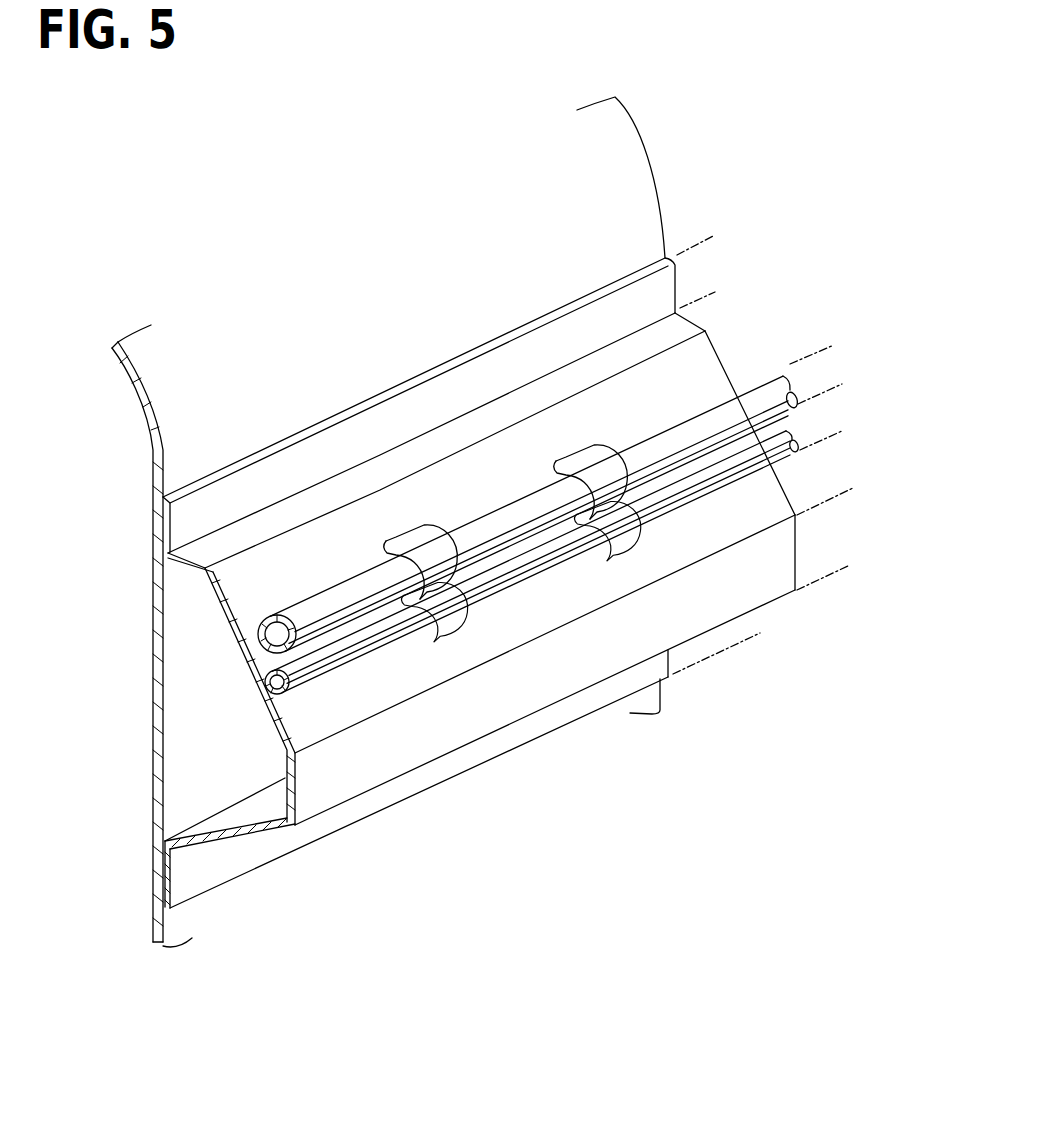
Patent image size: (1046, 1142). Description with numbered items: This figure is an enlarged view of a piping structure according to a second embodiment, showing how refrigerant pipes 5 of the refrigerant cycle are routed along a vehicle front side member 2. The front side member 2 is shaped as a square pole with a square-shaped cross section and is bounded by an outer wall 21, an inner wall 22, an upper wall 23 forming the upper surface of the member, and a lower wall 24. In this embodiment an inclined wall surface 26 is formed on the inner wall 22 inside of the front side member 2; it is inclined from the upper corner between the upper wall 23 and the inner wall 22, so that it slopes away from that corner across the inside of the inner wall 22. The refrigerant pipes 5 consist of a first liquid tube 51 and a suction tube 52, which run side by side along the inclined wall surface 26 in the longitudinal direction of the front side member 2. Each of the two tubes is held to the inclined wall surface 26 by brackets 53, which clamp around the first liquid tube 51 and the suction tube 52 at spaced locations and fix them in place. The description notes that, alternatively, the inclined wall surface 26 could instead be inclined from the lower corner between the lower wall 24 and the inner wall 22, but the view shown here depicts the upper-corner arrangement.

The front side member 2 is at (420, 778).
The outer wall 21 is at (176, 752).
The inner wall 22 is at (552, 690).
The upper wall 23 is at (208, 552).
The lower wall 24 is at (229, 840).
The inclined wall surface 26 is at (478, 477).
The refrigerant pipes 5 is at (708, 510).
The first liquid tube 51 is at (778, 441).
The suction tube 52 is at (767, 385).
The brackets 53 is at (422, 543).